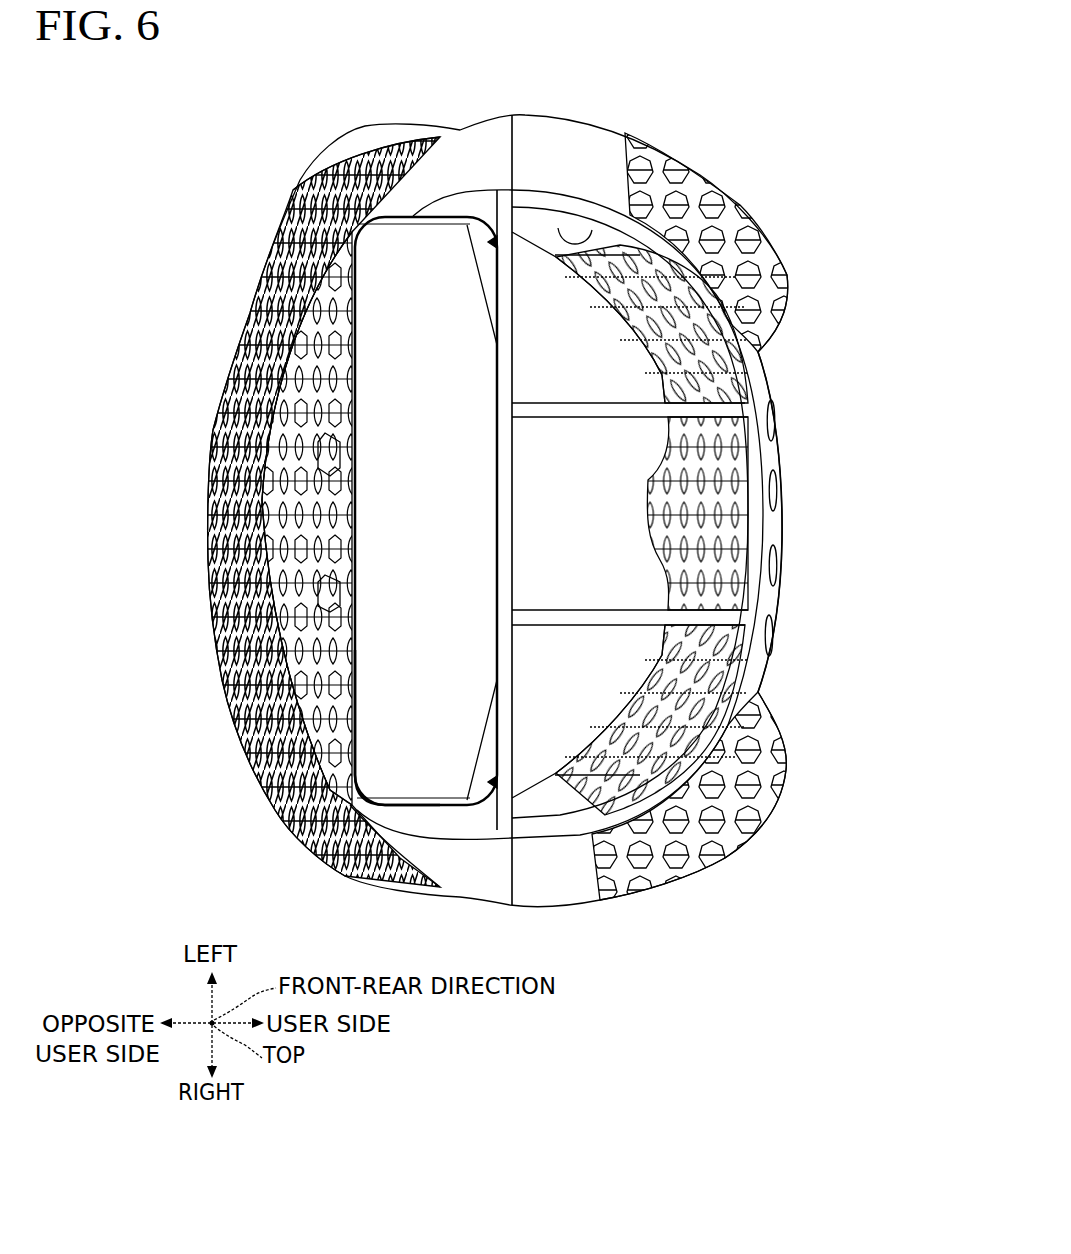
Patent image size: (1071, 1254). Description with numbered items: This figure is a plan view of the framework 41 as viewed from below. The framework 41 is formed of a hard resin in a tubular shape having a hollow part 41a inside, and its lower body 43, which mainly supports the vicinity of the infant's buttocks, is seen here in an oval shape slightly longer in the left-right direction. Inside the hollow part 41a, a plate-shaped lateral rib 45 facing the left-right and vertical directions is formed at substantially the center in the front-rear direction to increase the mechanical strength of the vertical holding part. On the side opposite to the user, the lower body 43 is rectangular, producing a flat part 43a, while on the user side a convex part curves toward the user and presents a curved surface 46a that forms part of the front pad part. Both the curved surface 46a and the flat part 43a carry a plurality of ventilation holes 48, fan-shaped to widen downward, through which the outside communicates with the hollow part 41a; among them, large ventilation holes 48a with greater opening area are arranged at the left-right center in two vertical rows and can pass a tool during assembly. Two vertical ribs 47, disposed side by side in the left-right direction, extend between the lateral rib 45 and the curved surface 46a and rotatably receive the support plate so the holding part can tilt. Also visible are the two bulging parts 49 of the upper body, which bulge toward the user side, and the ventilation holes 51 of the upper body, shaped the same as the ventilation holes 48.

The framework 41 is at (842, 310).
The hollow part 41a is at (558, 228).
The lower body 43 is at (482, 808).
The flat part 43a is at (345, 682).
The lateral rib 45 is at (497, 512).
The curved surface 46a is at (776, 546).
The vertical ribs 47 is at (592, 398).
The ventilation holes 48 is at (343, 620).
The large ventilation holes 48a is at (345, 567).
The bulging parts 49 is at (755, 262).
The ventilation holes 51 is at (228, 334).